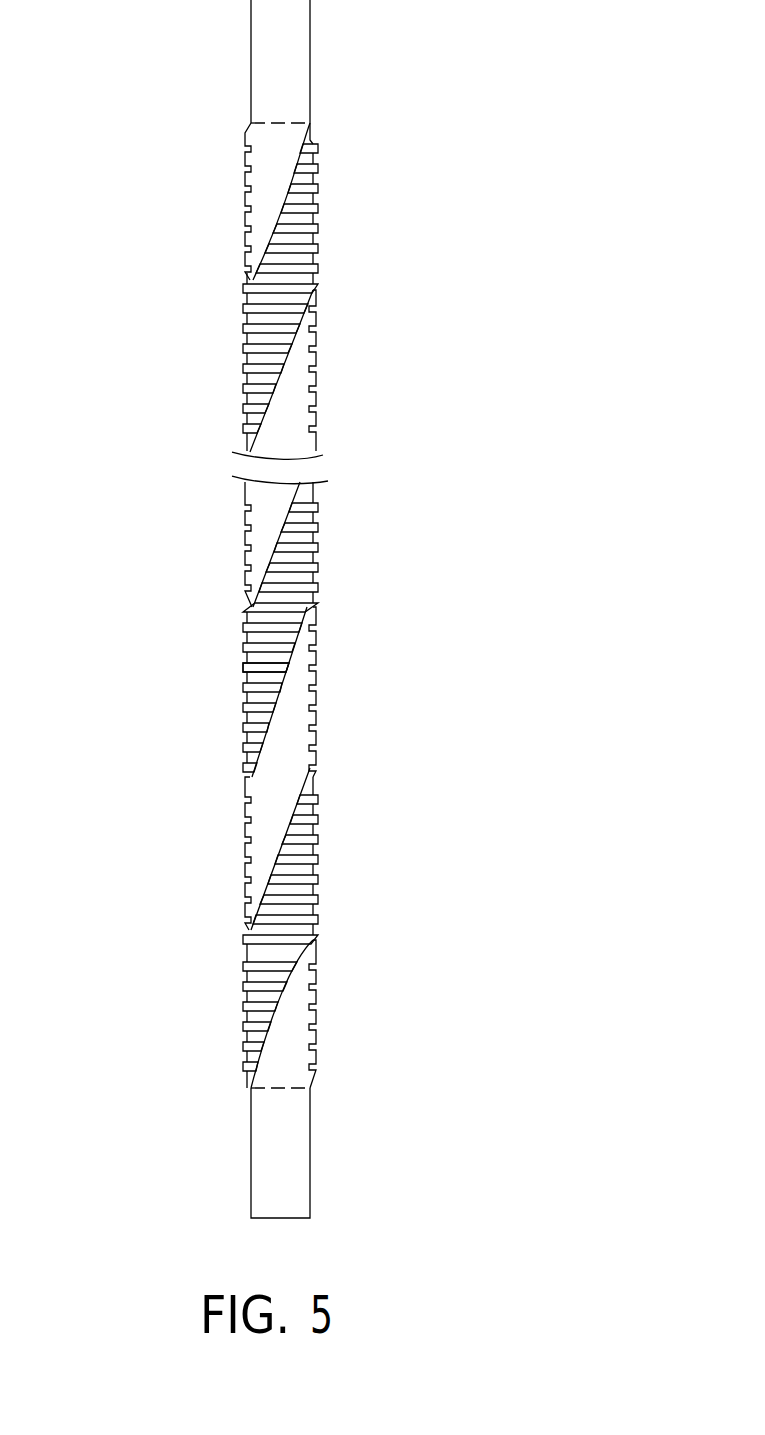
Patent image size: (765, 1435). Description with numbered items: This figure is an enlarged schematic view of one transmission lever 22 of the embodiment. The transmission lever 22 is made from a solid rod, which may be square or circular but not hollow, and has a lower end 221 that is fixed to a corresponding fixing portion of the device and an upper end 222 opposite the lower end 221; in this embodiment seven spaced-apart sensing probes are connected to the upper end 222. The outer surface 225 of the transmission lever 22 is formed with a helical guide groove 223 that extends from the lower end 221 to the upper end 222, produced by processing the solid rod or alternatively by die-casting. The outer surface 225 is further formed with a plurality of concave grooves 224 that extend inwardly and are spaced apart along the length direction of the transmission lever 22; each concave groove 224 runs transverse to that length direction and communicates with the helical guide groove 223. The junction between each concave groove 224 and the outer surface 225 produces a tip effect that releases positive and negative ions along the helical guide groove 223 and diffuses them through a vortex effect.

The transmission lever 22 is at (242, 609).
The lower end 221 is at (288, 1083).
The upper end 222 is at (288, 126).
The guide groove 223 is at (268, 832).
The concave grooves 224 is at (268, 642).
The outer surface 225 is at (256, 672).